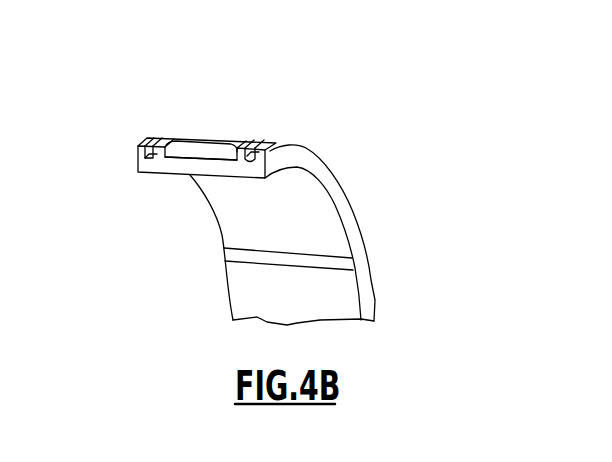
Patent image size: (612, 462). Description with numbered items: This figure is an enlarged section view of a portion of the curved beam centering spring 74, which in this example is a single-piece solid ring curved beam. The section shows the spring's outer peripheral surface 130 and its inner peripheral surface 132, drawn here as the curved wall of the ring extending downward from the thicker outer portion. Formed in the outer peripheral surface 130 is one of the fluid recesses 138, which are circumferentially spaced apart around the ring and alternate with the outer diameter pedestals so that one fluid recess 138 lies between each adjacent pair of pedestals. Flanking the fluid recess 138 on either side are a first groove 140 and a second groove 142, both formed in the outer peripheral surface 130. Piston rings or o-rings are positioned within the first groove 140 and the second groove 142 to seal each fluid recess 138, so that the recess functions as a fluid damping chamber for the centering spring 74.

The curved beam centering spring 74 is at (133, 120).
The outer peripheral surface 130 is at (255, 141).
The inner peripheral surface 132 is at (220, 228).
The fluid recess 138 is at (207, 152).
The first groove 140 is at (150, 158).
The second groove 142 is at (268, 160).